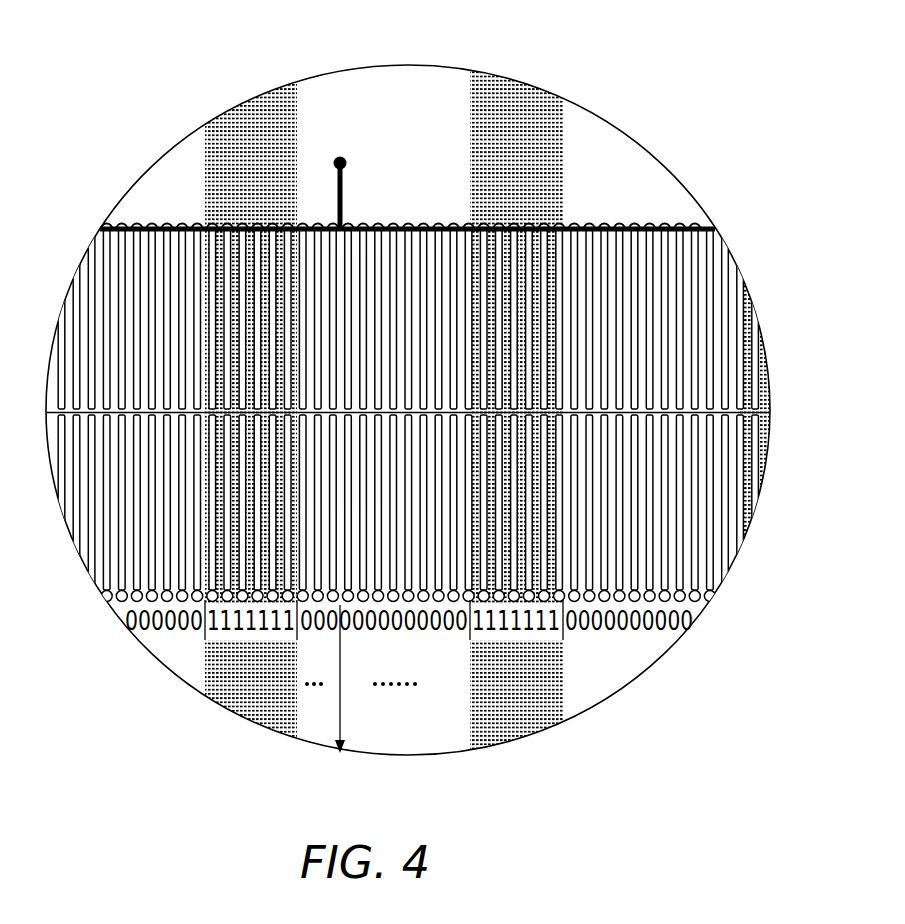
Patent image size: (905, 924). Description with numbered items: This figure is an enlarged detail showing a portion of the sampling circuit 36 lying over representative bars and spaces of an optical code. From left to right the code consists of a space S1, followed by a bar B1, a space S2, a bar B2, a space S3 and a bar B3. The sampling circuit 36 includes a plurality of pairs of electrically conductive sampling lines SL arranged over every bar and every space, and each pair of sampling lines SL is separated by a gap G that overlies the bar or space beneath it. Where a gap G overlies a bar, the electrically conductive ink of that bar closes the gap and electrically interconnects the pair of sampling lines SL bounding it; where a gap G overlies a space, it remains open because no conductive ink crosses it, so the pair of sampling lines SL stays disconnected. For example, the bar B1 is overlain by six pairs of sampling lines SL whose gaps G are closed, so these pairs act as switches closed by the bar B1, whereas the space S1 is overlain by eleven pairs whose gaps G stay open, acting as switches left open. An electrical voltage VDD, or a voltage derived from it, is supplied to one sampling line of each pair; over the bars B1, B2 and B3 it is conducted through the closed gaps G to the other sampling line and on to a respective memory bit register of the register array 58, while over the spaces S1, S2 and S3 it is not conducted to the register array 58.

The sampling circuit 36 is at (148, 229).
The register array 58 is at (339, 697).
The bar B1 is at (248, 100).
The bar B2 is at (527, 90).
The bar B3 is at (745, 300).
The space S1 is at (152, 141).
The space S2 is at (377, 50).
The space S3 is at (639, 117).
The sampling lines SL is at (70, 317).
The gap G is at (68, 410).
The supply voltage VDD is at (341, 181).